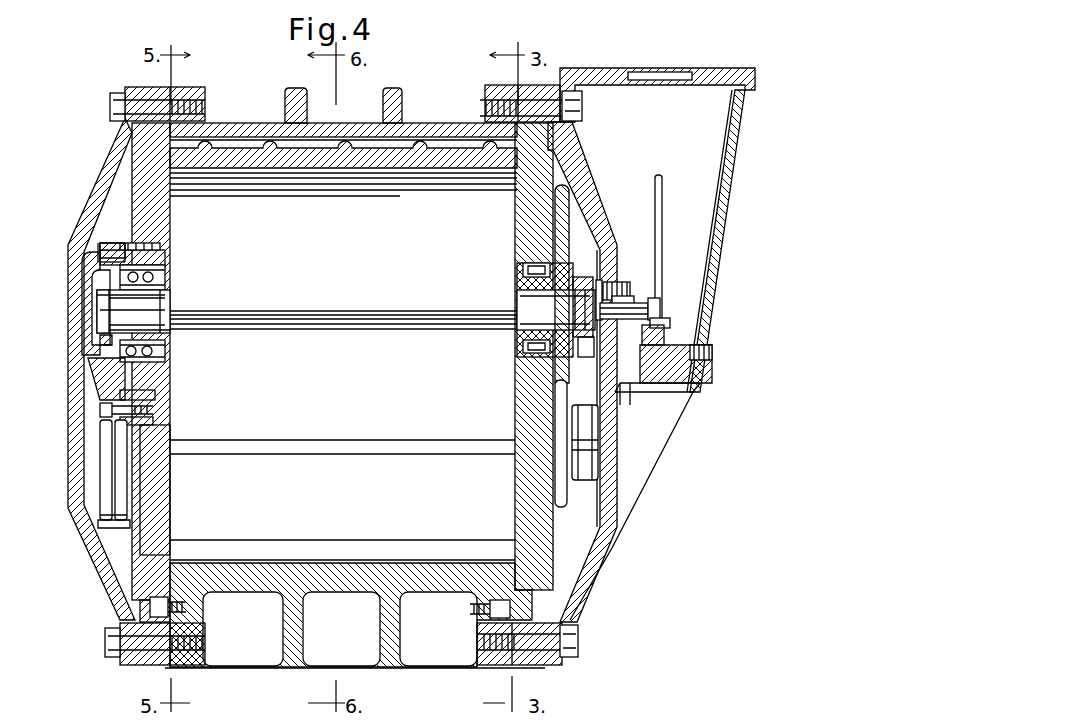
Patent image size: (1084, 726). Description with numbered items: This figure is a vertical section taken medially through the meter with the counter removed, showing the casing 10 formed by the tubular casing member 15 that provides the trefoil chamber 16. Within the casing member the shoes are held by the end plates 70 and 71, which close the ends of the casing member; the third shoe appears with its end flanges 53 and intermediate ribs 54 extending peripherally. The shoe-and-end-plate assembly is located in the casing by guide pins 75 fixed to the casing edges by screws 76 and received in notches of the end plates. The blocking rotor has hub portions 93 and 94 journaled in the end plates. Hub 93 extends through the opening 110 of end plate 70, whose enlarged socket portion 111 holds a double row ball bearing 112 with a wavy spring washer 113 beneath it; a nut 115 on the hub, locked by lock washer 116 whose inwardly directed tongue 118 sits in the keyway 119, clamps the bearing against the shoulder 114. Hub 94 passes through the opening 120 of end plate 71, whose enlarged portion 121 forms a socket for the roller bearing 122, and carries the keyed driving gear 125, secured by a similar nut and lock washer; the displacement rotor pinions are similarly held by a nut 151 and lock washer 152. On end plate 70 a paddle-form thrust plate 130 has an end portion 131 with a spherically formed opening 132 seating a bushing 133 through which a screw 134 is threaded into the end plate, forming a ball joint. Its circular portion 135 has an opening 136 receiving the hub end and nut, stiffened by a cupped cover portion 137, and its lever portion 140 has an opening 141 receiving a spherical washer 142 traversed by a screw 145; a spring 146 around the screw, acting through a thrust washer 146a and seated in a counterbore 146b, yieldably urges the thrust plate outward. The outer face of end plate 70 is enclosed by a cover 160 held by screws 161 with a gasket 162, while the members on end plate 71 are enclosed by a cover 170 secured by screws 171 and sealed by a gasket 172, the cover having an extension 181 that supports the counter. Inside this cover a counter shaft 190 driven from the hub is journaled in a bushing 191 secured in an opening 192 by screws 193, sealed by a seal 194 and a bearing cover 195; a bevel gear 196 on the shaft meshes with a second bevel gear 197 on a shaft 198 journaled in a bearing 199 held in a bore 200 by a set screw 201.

The casing 10 is at (435, 118).
The tubular casing member 15 is at (258, 124).
The chamber 16 is at (408, 508).
The end flanges 53 is at (190, 152).
The intermediate ribs 54 is at (278, 150).
The end plate 70 is at (165, 522).
The end plate 71 is at (522, 498).
The guide pins 75 is at (150, 603).
The screws 76 is at (150, 616).
The hub portion 93 is at (100, 352).
The hub portion 94 is at (540, 326).
The opening 110 is at (168, 297).
The enlarged portion 111 is at (100, 247).
The double row ball bearing 112 is at (160, 263).
The wavy spring washer 113 is at (162, 278).
The shoulder 114 is at (165, 332).
The nut 115 is at (97, 296).
The lock washer 116 is at (165, 350).
The inwardly directed tongue 118 is at (95, 339).
The keyway 119 is at (170, 312).
The opening 120 is at (520, 289).
The enlarged portion 121 is at (580, 280).
The roller bearing 122 is at (525, 268).
The driving gear 125 is at (566, 195).
The thrust plate 130 is at (95, 398).
The end portion 131 is at (108, 245).
The opening 132 is at (100, 250).
The bushing 133 is at (96, 257).
The screw 134 is at (118, 248).
The circular portion 135 is at (92, 315).
The opening 136 is at (80, 388).
The cupped cover portion 137 is at (95, 275).
The lever portion 140 is at (100, 428).
The opening 141 is at (100, 470).
The spherical washer 142 is at (100, 448).
The screw 145 is at (158, 415).
The spring 146 is at (160, 406).
The thrust washer 146a is at (150, 393).
The counterbore 146b is at (145, 440).
The nut 151 is at (596, 450).
The lock washer 152 is at (567, 472).
The cover 160 is at (65, 526).
The screws 161 is at (114, 105).
The gasket 162 is at (172, 88).
The cover 170 is at (587, 156).
The screws 171 is at (553, 100).
The gasket 172 is at (516, 92).
The extension 181 is at (750, 70).
The counter shaft 190 is at (622, 392).
The bushing 191 is at (640, 308).
The opening 192 is at (615, 290).
The screws 193 is at (630, 298).
The seal 194 is at (665, 388).
The bearing cover 195 is at (664, 330).
The bevel gear 196 is at (662, 305).
The second bevel gear 197 is at (668, 320).
The shaft 198 is at (662, 198).
The bearing 199 is at (665, 410).
The bore 200 is at (680, 392).
The set screw 201 is at (712, 353).